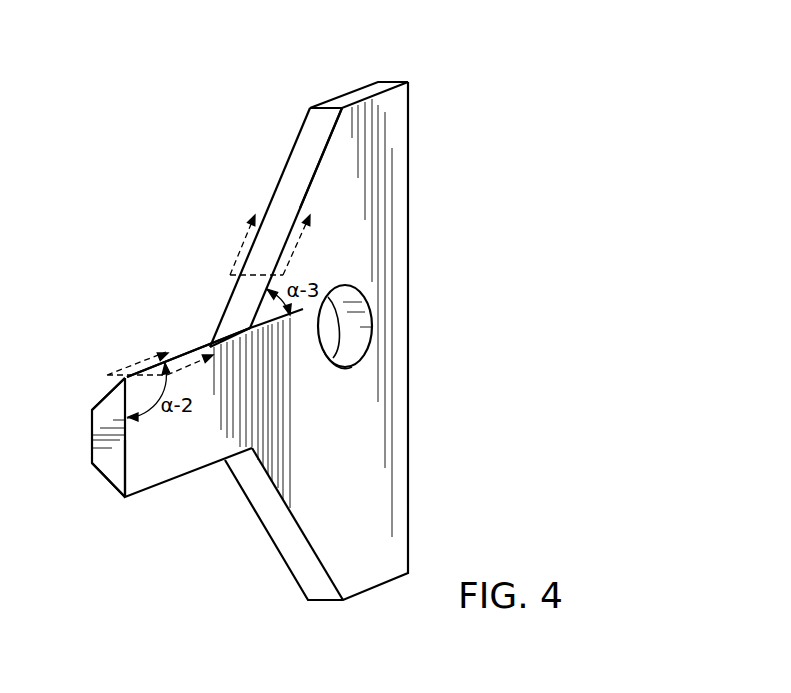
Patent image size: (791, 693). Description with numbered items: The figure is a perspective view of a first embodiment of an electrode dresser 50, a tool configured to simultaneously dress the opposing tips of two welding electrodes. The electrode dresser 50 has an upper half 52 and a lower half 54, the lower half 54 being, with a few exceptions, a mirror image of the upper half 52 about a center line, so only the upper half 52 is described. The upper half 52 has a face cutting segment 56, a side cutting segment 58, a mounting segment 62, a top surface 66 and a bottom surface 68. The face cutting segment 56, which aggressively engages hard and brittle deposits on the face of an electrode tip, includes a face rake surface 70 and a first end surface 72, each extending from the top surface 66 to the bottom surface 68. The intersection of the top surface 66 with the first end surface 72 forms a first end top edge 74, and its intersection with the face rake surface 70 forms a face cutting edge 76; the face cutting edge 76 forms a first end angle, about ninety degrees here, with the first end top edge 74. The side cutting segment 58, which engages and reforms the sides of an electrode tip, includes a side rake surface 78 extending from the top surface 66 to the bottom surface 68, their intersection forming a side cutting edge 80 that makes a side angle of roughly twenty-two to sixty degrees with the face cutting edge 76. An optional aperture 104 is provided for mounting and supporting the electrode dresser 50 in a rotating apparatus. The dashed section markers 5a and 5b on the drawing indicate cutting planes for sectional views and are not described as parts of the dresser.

The electrode dresser 50 is at (105, 125).
The upper half 52 is at (423, 76).
The lower half 54 is at (423, 325).
The face cutting segment 56 is at (125, 165).
The side cutting segment 58 is at (250, 118).
The mounting segment 62 is at (342, 82).
The top surface 66 is at (350, 448).
The bottom surface 68 is at (92, 440).
The face rake surface 70 is at (103, 398).
The first end surface 72 is at (105, 468).
The first end top edge 74 is at (127, 476).
The face cutting edge 76 is at (188, 352).
The side rake surface 78 is at (241, 294).
The side cutting edge 80 is at (327, 145).
The aperture 104 is at (352, 367).
The section line 5a is at (168, 361).
The section line 5b is at (277, 240).